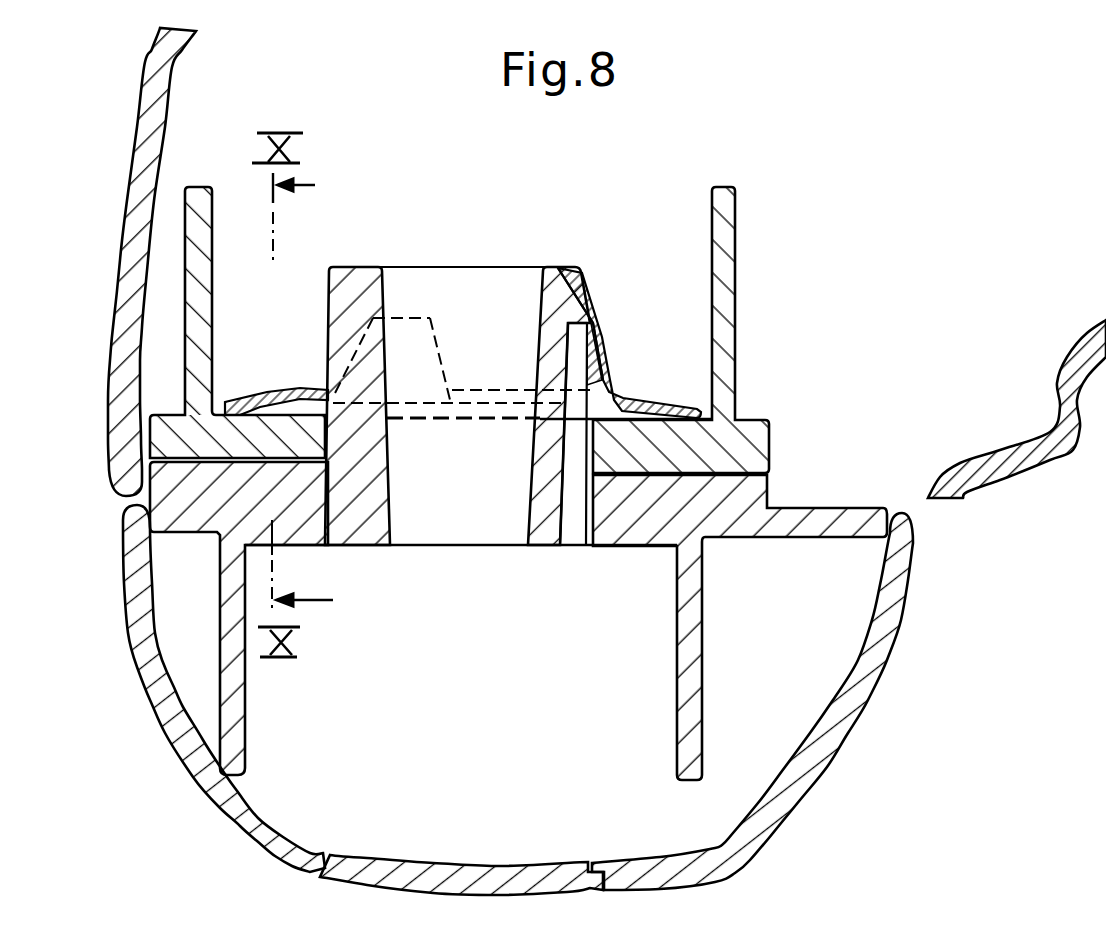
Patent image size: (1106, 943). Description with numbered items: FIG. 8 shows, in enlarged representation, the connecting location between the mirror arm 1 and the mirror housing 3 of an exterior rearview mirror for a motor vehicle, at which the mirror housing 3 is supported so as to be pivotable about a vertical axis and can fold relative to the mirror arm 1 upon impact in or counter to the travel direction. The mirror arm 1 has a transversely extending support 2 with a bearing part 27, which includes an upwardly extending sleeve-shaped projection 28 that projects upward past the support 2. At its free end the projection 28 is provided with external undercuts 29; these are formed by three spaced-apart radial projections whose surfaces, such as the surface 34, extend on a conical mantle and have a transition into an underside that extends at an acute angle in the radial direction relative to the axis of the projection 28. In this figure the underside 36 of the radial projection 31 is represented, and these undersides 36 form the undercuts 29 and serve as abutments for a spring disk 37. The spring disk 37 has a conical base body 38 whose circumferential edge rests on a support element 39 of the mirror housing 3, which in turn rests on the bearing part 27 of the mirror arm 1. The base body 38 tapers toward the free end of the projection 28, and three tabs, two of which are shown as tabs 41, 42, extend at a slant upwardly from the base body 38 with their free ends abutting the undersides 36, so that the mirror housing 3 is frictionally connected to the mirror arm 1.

The mirror arm 1 is at (526, 700).
The support 2 is at (873, 628).
The mirror housing 3 is at (140, 212).
The bearing part 27 is at (722, 510).
The sleeve-shaped projection 28 is at (358, 277).
The external undercut 29 is at (562, 394).
The radial projection 31 is at (553, 300).
The surface 34 is at (582, 268).
The underside 36 is at (570, 323).
The spring disk 37 is at (620, 312).
The conical base body 38 is at (640, 407).
The support element 39 is at (685, 453).
The tab 41 is at (540, 380).
The tab 42 is at (402, 343).